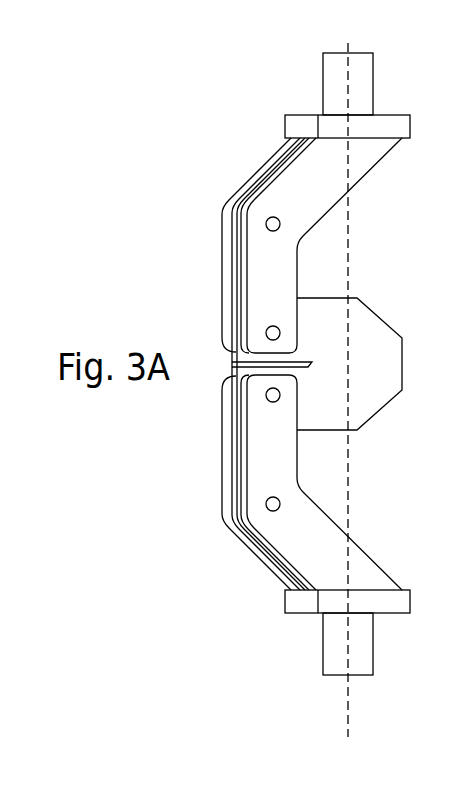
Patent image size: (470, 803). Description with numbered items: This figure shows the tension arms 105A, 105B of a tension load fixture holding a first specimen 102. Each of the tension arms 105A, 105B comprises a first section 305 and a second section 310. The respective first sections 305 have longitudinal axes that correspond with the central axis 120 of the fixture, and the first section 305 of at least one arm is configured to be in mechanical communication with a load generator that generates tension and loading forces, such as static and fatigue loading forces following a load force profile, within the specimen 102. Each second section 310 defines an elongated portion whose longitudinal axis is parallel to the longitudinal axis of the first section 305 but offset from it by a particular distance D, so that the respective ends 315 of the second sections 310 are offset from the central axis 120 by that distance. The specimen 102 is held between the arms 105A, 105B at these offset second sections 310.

The central axis 120 is at (347, 90).
The first section 305 is at (373, 82).
The tension arm 105A is at (240, 187).
The tension arm 105B is at (252, 557).
The end 315 is at (222, 323).
The second section 310 is at (222, 230).
The first specimen 102 is at (378, 318).